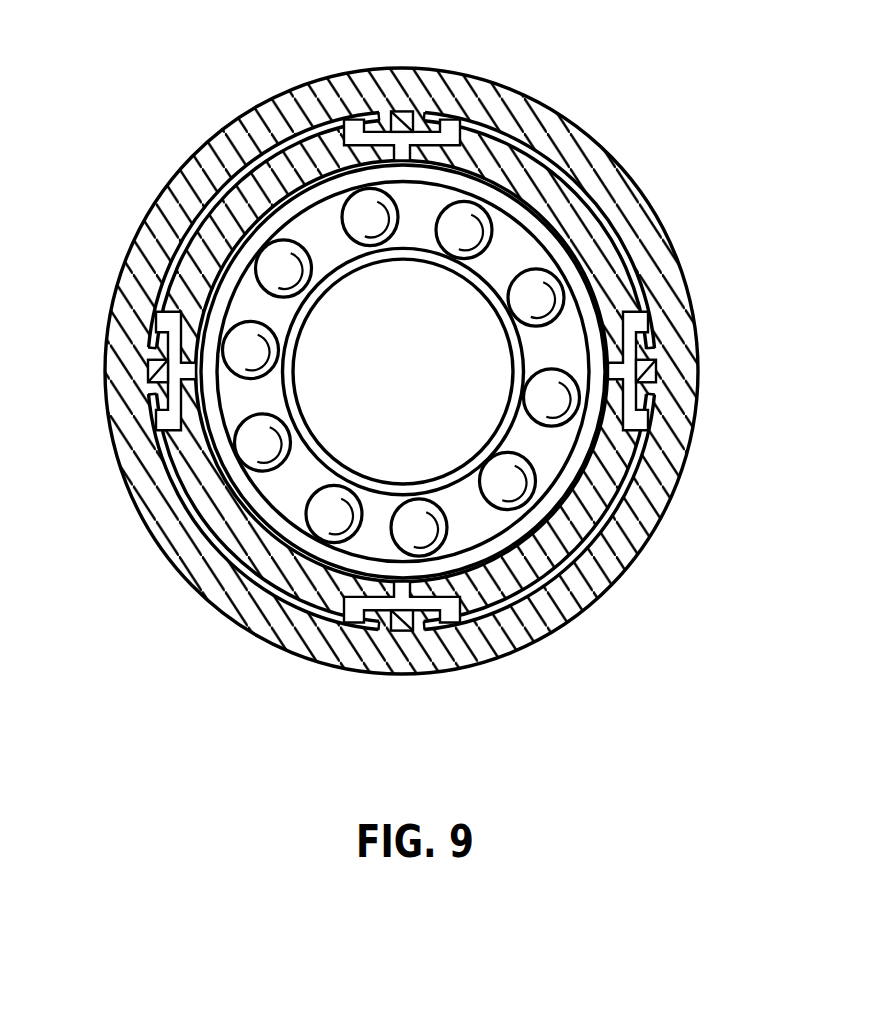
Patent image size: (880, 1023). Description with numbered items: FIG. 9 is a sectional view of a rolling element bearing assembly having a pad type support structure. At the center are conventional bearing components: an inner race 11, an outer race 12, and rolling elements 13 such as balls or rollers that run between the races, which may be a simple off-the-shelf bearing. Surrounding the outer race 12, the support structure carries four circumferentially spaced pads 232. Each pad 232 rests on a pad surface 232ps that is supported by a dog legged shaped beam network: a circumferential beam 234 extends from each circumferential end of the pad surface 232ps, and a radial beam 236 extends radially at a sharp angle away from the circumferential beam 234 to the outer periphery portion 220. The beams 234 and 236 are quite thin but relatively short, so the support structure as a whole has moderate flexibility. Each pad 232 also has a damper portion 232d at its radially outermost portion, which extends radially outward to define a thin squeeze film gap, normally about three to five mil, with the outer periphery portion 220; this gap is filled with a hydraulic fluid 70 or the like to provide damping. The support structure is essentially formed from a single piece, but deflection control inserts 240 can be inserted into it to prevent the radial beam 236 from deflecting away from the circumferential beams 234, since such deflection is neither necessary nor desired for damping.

The inner race 11 is at (520, 358).
The outer race 12 is at (520, 220).
The rolling elements 13 is at (520, 302).
The hydraulic fluid 70 is at (143, 331).
The outer periphery portion 220 is at (378, 652).
The pad 232 is at (505, 558).
The damper portion 232d is at (597, 497).
The pad surface 232ps is at (463, 593).
The circumferential beam 234 is at (645, 420).
The radial beam 236 is at (648, 388).
The deflection control insert 240 is at (660, 365).